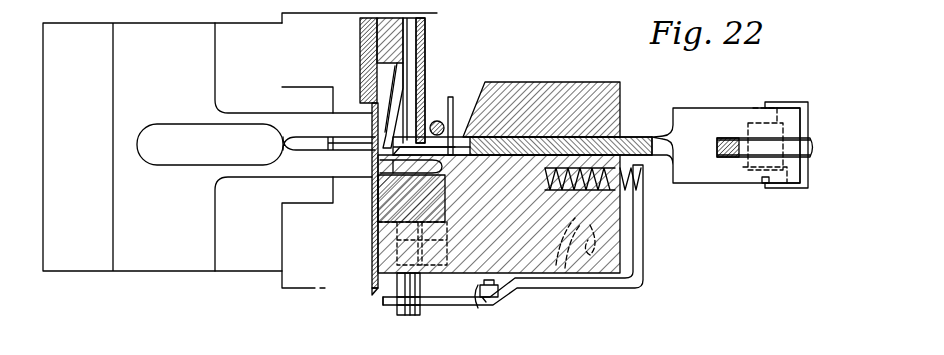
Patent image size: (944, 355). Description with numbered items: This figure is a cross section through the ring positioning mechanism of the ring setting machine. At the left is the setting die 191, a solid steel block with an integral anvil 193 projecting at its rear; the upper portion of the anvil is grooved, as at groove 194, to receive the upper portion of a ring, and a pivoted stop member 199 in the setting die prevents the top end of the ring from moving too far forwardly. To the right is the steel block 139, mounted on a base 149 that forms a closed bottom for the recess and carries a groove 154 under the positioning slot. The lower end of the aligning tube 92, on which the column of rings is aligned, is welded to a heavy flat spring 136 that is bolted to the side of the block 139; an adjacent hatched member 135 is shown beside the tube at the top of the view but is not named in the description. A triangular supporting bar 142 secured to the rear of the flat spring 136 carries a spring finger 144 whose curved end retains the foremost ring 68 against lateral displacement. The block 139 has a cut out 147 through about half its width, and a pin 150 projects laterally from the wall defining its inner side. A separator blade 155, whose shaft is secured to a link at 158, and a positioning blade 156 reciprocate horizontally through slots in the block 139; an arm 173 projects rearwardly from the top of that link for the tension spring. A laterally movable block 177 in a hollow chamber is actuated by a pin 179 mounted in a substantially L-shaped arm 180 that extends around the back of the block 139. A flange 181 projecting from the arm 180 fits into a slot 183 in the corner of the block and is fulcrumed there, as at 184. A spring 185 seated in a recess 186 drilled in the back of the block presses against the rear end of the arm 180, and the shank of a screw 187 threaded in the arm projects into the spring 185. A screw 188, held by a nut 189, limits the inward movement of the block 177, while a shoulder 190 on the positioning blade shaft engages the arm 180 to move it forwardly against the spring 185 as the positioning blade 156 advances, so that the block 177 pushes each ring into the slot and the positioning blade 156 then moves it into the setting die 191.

The setting die 191 is at (146, 240).
The base 149 is at (285, 279).
The stop member 199 is at (172, 133).
The groove 194 is at (295, 136).
The anvil 193 is at (309, 200).
The supporting bar 142 is at (362, 22).
The block 135 is at (362, 70).
The aligning tube 92 is at (428, 28).
The spring finger 144 is at (390, 118).
The ring 68 is at (438, 120).
The pin 150 is at (453, 96).
The cut out 147 is at (490, 98).
The separator blade 155 is at (628, 137).
The groove 154 is at (388, 175).
The flange 181 is at (625, 260).
The laterally movable block 177 is at (383, 209).
The flat spring 136 is at (372, 247).
The recess 186 is at (596, 192).
The spring 185 is at (540, 193).
The securing point of separator blade shaft 158 is at (748, 176).
The positioning blade 156 is at (797, 191).
The arm 173 is at (737, 137).
The shoulder 190 is at (763, 186).
The screw 187 is at (647, 193).
The fulcrum 184 is at (628, 289).
The slot 183 is at (577, 295).
The steel block 139 is at (522, 286).
The pin 179 is at (398, 284).
The arm 180 is at (435, 306).
The nut 189 is at (502, 307).
The screw 188 is at (468, 322).